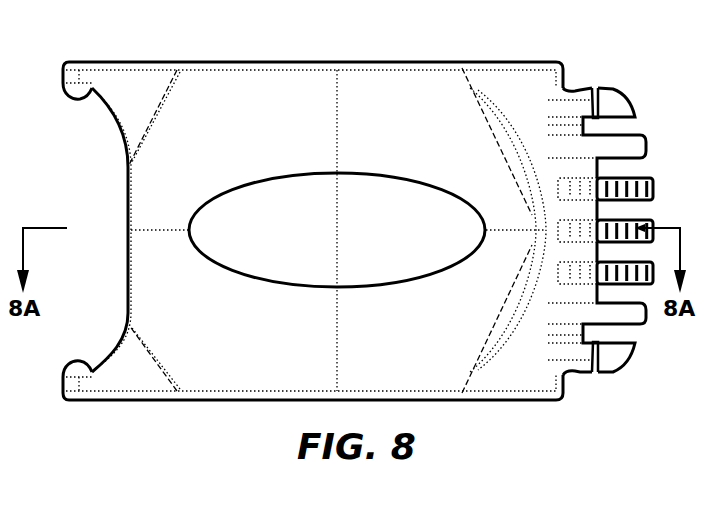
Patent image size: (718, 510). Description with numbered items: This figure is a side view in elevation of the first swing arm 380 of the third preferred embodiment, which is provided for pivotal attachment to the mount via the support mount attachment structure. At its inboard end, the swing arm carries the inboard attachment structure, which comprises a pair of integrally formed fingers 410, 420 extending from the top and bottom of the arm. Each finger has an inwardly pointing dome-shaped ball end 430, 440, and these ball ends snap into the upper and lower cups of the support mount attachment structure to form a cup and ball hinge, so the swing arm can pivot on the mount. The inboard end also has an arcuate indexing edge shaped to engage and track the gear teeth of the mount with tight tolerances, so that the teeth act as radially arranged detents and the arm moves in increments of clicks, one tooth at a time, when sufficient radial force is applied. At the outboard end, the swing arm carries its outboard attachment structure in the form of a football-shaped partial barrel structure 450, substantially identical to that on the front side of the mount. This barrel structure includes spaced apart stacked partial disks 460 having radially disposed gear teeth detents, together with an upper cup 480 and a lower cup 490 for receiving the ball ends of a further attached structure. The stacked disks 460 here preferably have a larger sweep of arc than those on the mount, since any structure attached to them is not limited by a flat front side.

The first swing arm 380 is at (363, 62).
The finger 410 is at (132, 82).
The finger 420 is at (118, 383).
The dome-shaped ball end 430 is at (82, 100).
The dome-shaped ball end 440 is at (82, 362).
The football-shaped partial barrel structure 450 is at (626, 76).
The stacked partial disks 460 is at (655, 185).
The upper cup 480 is at (594, 87).
The lower cup 490 is at (595, 374).